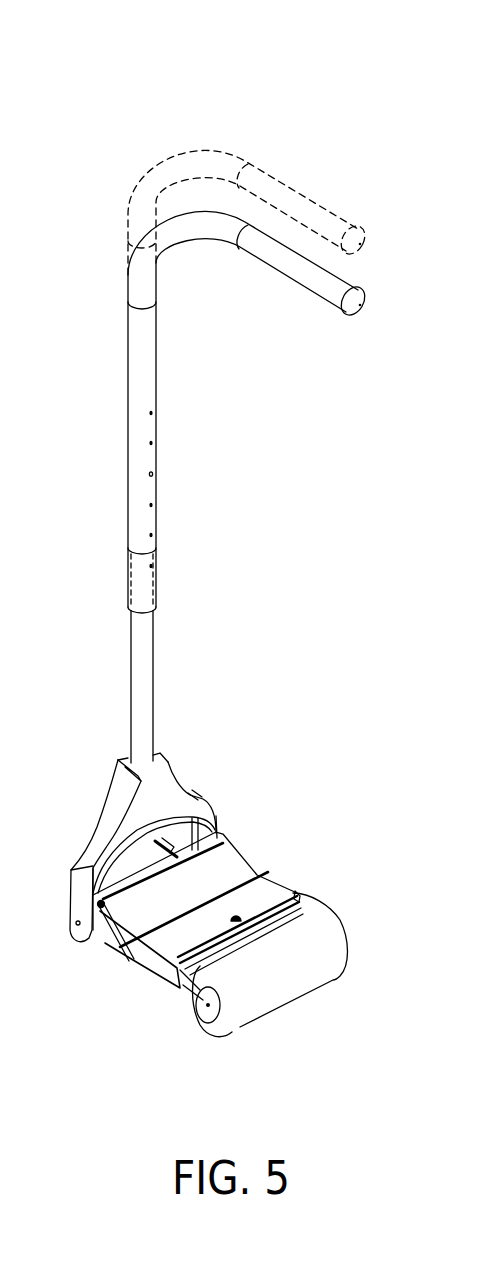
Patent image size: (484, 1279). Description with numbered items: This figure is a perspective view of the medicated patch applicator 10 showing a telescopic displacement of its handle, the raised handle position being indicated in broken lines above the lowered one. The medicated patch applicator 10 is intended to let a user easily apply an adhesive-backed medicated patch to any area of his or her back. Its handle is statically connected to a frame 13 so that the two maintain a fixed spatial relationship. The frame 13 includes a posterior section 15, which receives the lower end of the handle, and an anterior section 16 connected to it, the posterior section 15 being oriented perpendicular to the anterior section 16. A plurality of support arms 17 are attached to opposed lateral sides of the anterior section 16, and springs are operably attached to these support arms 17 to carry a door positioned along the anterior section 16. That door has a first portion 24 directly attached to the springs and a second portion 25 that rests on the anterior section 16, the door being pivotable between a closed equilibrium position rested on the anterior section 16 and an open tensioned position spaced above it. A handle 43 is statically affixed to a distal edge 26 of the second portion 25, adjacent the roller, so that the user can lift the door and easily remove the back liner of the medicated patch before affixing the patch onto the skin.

The medicated patch applicator 10 is at (233, 128).
The frame 13 is at (267, 808).
The posterior section 15 is at (93, 802).
The anterior section 16 is at (155, 983).
The support arms 17 is at (108, 940).
The first portion 24 is at (233, 860).
The second portion 25 is at (270, 885).
The distal edge 26 is at (298, 897).
The handle 43 is at (242, 923).